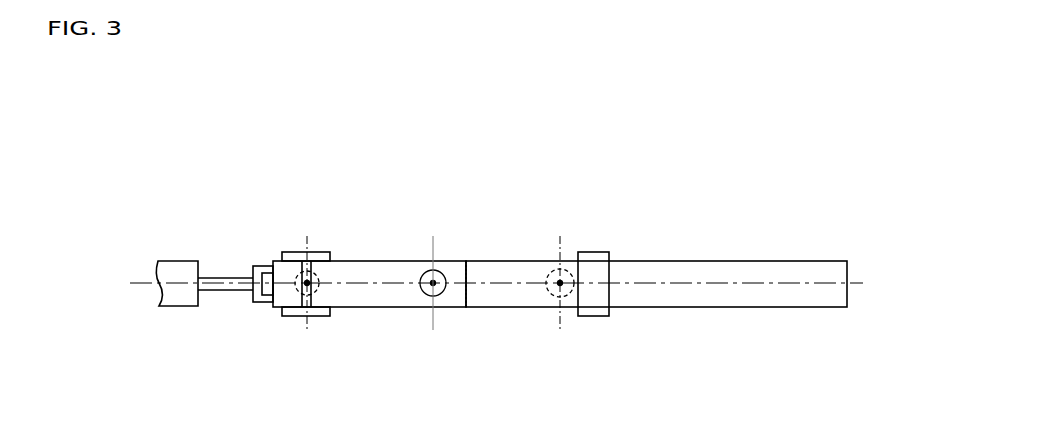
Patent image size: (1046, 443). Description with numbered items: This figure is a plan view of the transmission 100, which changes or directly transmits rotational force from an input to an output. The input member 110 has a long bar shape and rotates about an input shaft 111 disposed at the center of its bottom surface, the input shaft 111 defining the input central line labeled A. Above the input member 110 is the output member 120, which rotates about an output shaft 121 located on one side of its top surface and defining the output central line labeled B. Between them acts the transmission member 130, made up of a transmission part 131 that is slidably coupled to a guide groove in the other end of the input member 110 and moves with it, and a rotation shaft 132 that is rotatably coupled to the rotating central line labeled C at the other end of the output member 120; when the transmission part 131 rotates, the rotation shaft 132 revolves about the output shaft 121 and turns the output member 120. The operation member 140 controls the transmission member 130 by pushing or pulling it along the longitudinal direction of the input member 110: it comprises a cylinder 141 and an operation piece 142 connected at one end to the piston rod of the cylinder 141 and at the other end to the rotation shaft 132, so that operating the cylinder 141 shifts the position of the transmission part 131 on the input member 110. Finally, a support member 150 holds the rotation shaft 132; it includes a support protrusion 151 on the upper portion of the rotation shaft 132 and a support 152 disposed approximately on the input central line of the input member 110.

The transmission 100 is at (646, 137).
The input member 110 is at (665, 300).
The input shaft 111 is at (549, 295).
The output member 120 is at (388, 298).
The output shaft 121 is at (433, 283).
The transmission member 130 is at (271, 332).
The transmission part 131 is at (297, 317).
The rotation shaft 132 is at (284, 314).
The operation member 140 is at (214, 224).
The cylinder 141 is at (182, 268).
The operation piece 142 is at (265, 265).
The support member 150 is at (460, 221).
The support protrusion 151 is at (318, 276).
The support 152 is at (595, 255).